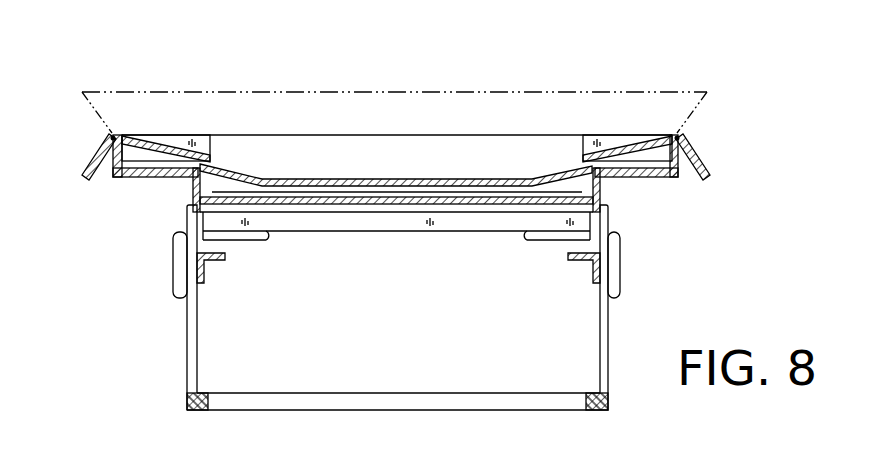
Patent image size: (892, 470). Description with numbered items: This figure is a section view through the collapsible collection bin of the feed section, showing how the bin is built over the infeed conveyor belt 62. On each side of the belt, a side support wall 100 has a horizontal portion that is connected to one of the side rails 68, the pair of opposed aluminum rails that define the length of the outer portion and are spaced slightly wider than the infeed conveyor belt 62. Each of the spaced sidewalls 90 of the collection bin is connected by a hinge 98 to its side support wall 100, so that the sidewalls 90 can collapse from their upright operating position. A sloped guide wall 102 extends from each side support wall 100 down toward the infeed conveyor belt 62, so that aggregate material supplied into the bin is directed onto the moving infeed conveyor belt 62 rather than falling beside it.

The infeed conveyor belt 62 is at (352, 178).
The side rails 68 is at (195, 191).
The sidewalls 90 is at (96, 153).
The hinge 98 is at (110, 142).
The side support wall 100 is at (678, 160).
The sloped guide wall 102 is at (155, 146).